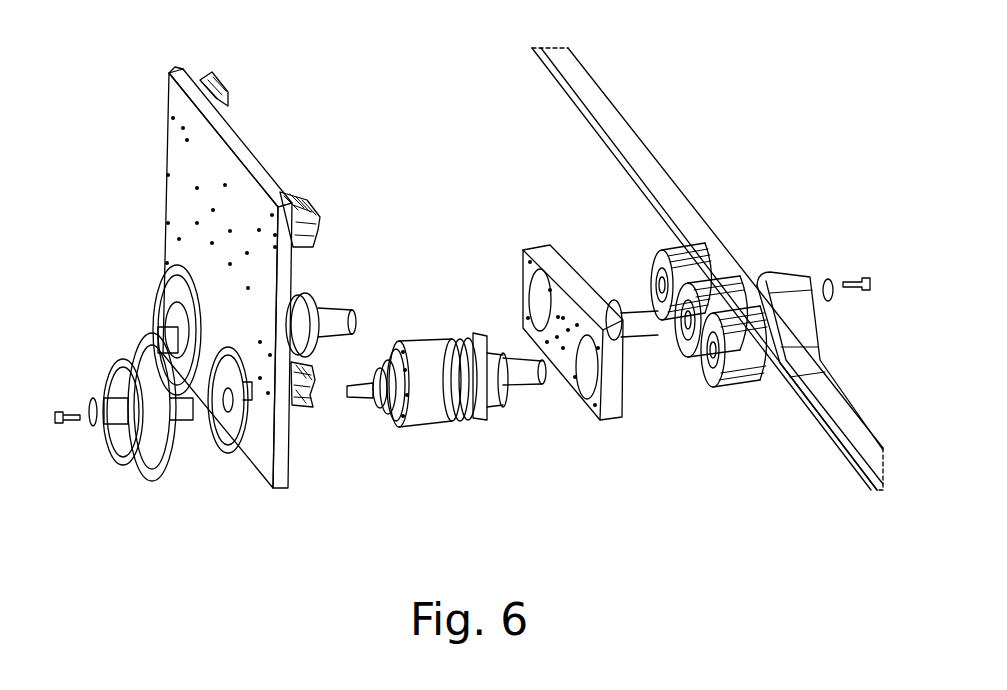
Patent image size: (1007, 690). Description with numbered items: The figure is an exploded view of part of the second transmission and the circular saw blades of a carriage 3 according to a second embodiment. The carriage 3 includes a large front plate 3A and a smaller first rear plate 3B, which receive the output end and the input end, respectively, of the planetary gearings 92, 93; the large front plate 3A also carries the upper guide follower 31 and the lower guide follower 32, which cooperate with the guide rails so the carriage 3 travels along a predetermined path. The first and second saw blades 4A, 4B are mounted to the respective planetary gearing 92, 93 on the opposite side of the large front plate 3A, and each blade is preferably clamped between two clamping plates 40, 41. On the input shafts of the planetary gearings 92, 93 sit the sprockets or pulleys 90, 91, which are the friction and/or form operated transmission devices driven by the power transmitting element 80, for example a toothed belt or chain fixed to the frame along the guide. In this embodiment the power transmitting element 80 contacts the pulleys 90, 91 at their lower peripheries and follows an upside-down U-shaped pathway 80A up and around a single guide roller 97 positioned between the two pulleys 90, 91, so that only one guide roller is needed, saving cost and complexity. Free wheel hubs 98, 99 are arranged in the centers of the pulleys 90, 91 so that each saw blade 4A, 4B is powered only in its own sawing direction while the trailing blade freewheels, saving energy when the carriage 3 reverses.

The carriage 3 is at (327, 115).
The large front plate 3A is at (266, 453).
The first rear plate 3B is at (611, 400).
The upper guide follower 31 is at (305, 200).
The lower guide follower 32 is at (308, 403).
The first saw blade 4A is at (156, 461).
The second saw blade 4B is at (165, 275).
The clamping plate 40 is at (123, 434).
The clamping plate 41 is at (243, 455).
The power transmitting element 80 is at (630, 150).
The upside-down U-shaped pathway 80A is at (795, 300).
The pulley 90 is at (745, 358).
The pulley 91 is at (705, 258).
The planetary gearing 92 is at (430, 400).
The planetary gearing 93 is at (343, 322).
The guide roller 97 is at (735, 292).
The free wheel hub 98 is at (705, 385).
The free wheel hub 99 is at (646, 264).